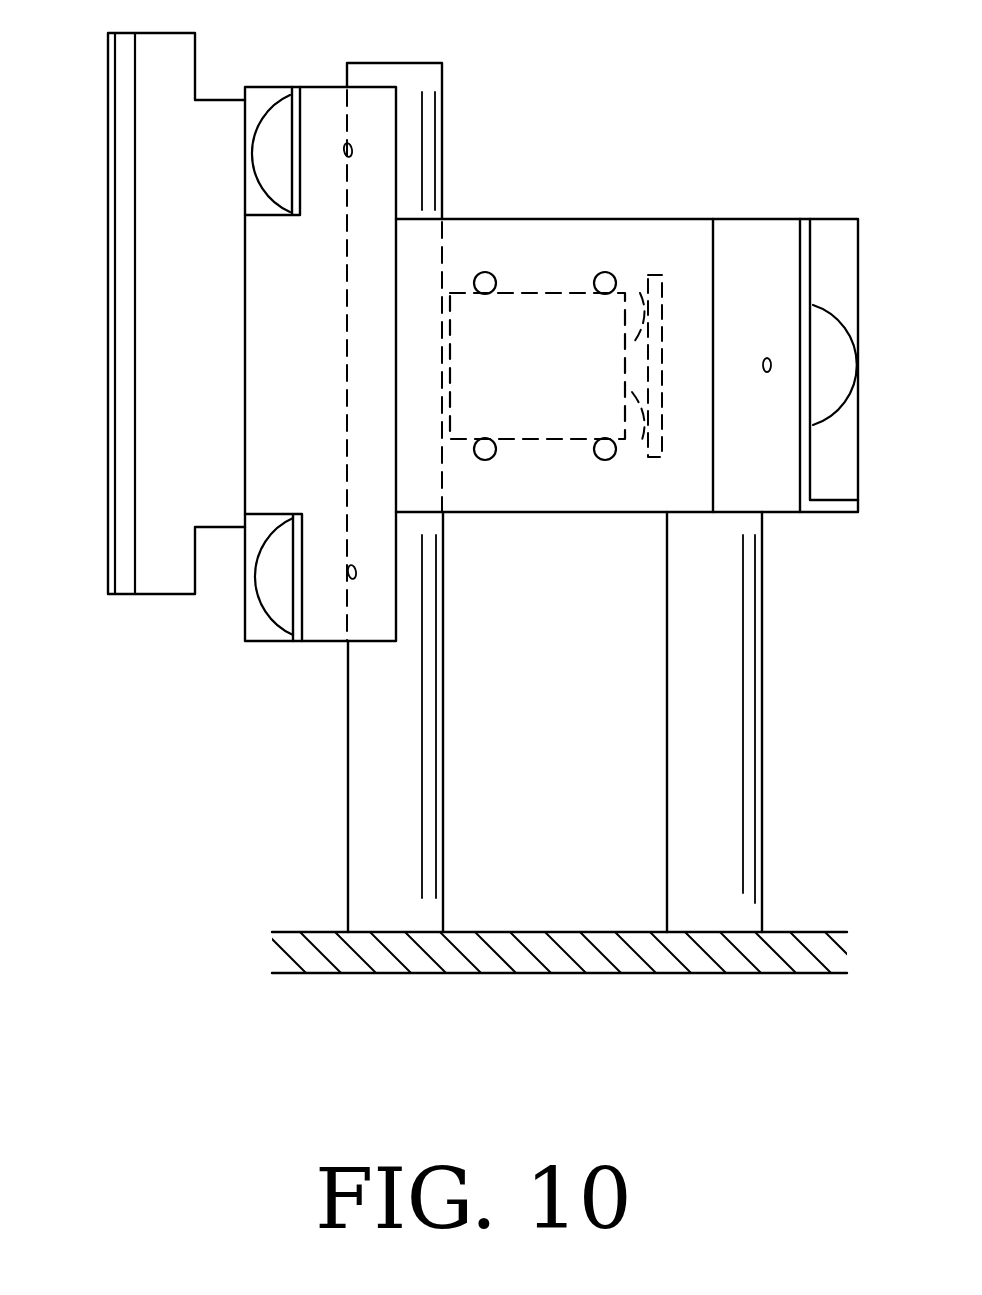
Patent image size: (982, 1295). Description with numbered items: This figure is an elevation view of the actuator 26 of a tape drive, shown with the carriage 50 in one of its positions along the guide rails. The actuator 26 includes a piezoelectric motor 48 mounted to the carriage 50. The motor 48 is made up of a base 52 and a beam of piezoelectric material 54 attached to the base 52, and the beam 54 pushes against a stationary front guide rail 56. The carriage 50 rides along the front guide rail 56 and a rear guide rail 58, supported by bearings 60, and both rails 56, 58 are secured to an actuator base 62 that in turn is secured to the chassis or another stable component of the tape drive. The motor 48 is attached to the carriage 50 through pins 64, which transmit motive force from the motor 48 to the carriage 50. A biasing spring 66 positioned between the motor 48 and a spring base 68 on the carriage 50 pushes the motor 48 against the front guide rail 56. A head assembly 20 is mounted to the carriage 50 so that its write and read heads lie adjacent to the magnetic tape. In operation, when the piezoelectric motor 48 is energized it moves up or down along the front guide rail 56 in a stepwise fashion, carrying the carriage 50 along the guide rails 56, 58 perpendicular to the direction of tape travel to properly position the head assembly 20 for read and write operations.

The head assembly 20 is at (107, 147).
The actuator 26 is at (664, 196).
The piezoelectric motor 48 is at (537, 292).
The carriage 50 is at (763, 219).
The base 52 is at (470, 417).
The beam of piezoelectric material 54 is at (450, 370).
The front guide rail 56 is at (363, 764).
The rear guide rail 58 is at (685, 755).
The bearings 60 is at (275, 110).
The actuator base 62 is at (807, 932).
The pins 64 is at (488, 294).
The biasing spring 66 is at (637, 392).
The spring base 68 is at (663, 345).